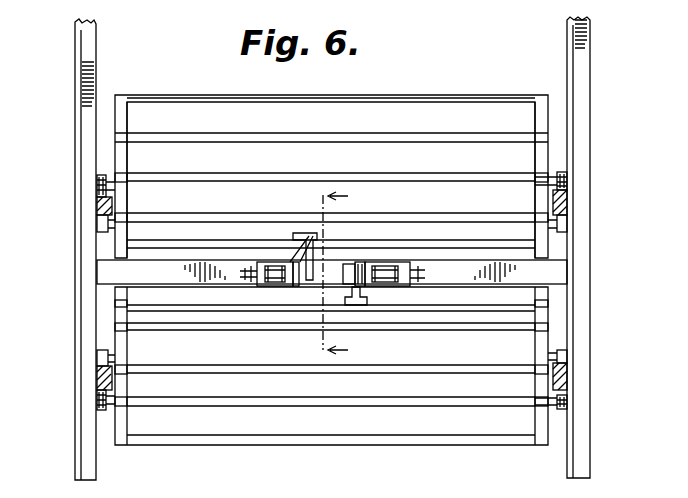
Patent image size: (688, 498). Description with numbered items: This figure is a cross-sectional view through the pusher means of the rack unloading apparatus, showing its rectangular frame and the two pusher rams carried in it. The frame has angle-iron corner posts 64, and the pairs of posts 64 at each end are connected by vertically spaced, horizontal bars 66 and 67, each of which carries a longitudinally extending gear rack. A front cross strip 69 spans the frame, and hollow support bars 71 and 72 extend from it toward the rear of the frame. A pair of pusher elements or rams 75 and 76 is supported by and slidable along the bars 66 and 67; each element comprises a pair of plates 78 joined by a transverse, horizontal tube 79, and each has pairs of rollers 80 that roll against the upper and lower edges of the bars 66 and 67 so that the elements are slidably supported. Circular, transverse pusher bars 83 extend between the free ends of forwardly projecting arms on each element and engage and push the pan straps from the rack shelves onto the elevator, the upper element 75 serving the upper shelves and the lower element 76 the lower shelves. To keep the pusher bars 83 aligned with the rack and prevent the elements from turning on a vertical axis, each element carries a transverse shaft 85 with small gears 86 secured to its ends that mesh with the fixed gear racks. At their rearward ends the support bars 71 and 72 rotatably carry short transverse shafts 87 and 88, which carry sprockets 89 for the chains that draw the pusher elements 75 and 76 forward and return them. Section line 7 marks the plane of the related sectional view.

The section line 7- 7 is at (342, 275).
The angle-iron corner posts 64 is at (85, 74).
The horizontal bar 66 is at (99, 206).
The horizontal bar 67 is at (100, 377).
The cross strip 69 is at (106, 274).
The hollow support bar 71 is at (284, 250).
The hollow support bar 72 is at (405, 266).
The pusher element 75 is at (183, 93).
The pusher element 76 is at (480, 448).
The plates 78 is at (121, 123).
The transverse horizontal tube 79 is at (240, 222).
The rollers 80 is at (100, 227).
The pusher bars 83 is at (298, 244).
The transverse shaft 85 is at (495, 185).
The small gears 86 is at (98, 182).
The short transverse shaft 87 is at (275, 290).
The short transverse shaft 88 is at (388, 266).
The sprockets 89 is at (303, 288).